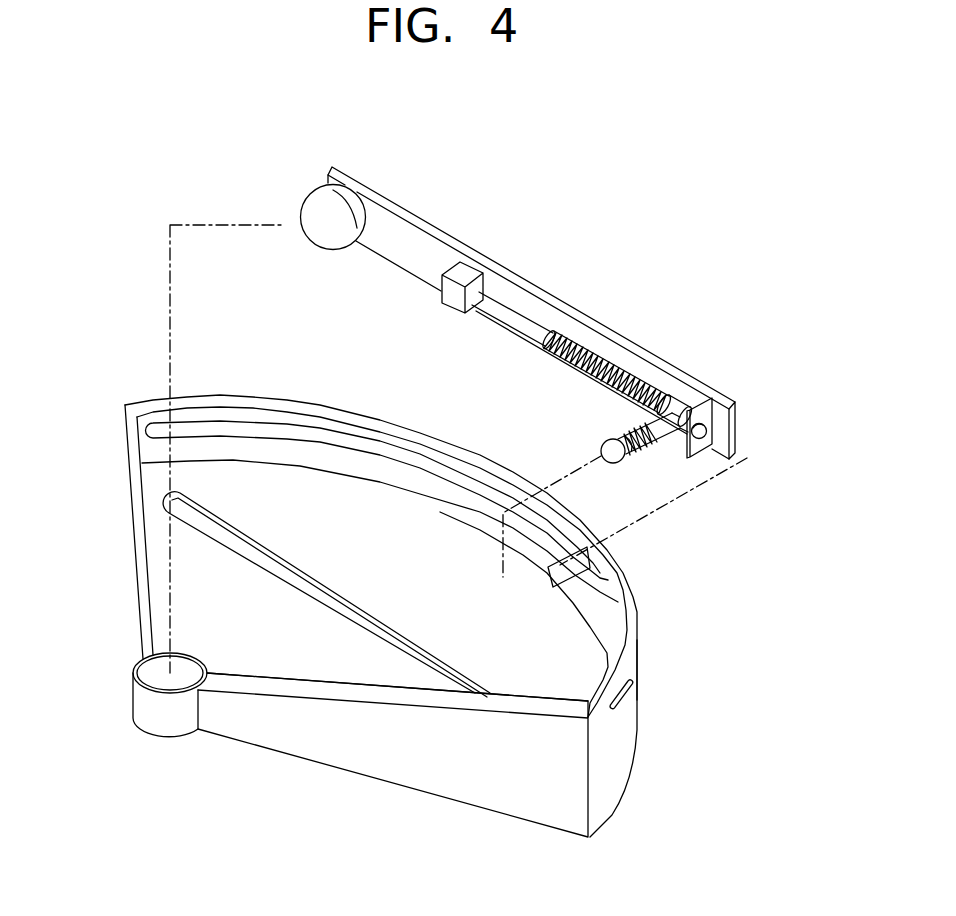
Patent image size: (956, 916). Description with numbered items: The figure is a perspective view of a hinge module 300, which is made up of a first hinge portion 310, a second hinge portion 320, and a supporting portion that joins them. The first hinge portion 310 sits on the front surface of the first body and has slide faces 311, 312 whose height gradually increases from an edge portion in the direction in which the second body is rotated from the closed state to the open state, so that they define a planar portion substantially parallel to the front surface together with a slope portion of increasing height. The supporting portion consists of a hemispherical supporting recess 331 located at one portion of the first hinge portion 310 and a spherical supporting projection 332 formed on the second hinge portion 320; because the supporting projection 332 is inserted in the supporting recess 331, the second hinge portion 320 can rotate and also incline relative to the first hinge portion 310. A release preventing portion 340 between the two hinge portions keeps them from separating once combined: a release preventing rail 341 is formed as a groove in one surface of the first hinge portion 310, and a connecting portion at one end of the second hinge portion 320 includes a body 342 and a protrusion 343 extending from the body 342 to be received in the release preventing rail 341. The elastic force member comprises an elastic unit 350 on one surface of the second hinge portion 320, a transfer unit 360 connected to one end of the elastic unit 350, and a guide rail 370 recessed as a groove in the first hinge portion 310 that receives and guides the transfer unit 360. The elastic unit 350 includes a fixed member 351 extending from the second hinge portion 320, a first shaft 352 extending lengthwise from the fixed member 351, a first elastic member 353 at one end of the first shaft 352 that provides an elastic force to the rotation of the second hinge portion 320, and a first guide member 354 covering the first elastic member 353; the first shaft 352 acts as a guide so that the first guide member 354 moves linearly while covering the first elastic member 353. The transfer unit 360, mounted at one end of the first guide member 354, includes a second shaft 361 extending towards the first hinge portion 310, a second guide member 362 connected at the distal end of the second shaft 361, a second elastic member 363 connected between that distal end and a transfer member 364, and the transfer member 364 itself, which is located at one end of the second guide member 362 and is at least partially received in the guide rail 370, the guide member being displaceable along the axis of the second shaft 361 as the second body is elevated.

The hinge module 300 is at (177, 195).
The first hinge portion 310 is at (645, 710).
The slide face 311 is at (346, 412).
The slide face 312 is at (627, 618).
The second hinge portion 320 is at (736, 383).
The supporting recess 331 is at (153, 670).
The supporting projection 332 is at (318, 200).
The release preventing portion 340 is at (740, 500).
The release preventing rail 341 is at (603, 574).
The body 342 is at (692, 458).
The protrusion 343 is at (708, 432).
The elastic unit 350 is at (427, 302).
The fixed member 351 is at (463, 268).
The first shaft 352 is at (500, 305).
The first elastic member 353 is at (585, 340).
The first guide member 354 is at (630, 368).
The transfer unit 360 is at (537, 383).
The second shaft 361 is at (667, 424).
The second guide member 362 is at (614, 441).
The second elastic member 363 is at (640, 418).
The transfer member 364 is at (603, 440).
The guide rail 370 is at (430, 680).